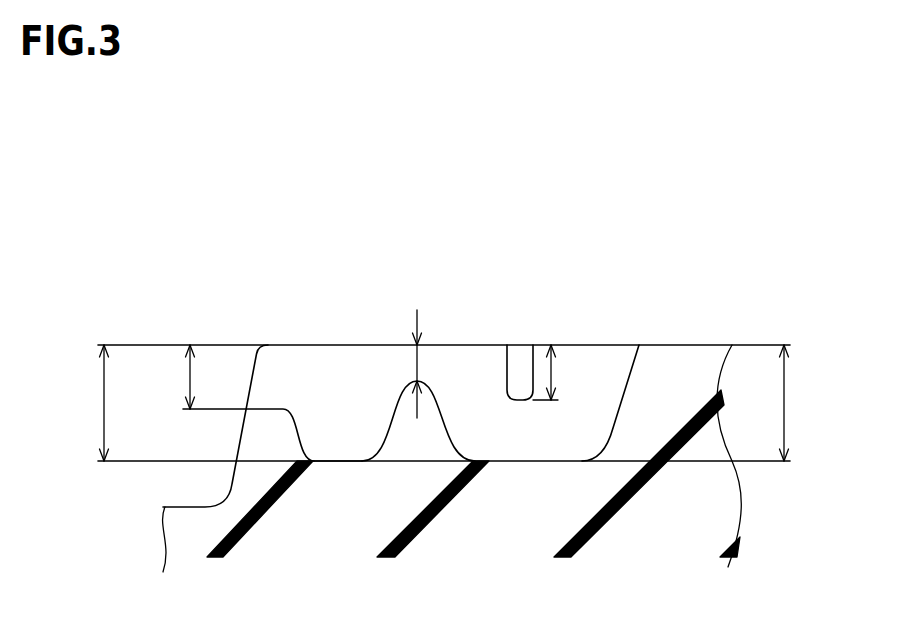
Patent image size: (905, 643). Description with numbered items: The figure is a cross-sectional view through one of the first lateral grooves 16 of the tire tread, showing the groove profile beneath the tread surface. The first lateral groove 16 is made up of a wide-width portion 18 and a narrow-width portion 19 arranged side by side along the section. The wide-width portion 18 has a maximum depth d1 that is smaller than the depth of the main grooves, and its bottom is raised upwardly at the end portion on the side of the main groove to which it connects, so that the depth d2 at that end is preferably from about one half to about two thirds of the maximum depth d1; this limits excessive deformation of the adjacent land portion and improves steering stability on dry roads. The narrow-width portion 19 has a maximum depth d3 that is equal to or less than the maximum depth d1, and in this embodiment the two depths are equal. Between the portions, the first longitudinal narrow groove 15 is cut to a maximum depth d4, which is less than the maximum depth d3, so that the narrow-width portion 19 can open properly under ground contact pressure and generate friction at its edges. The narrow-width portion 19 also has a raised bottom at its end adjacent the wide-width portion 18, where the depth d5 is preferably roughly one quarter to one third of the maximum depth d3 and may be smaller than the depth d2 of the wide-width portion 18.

The first longitudinal narrow groove 15 is at (522, 372).
The first lateral groove 16 is at (298, 335).
The wide-width portion 18 is at (344, 427).
The narrow-width portion 19 is at (592, 393).
The maximum depth of the wide-width portion d1 is at (86, 403).
The depth at the end portion of the wide-width portion d2 is at (171, 377).
The maximum depth of the narrow-width portion d3 is at (803, 403).
The maximum depth of the first longitudinal narrow groove d4 is at (553, 373).
The depth of the end of the narrow-width portion d5 is at (418, 363).